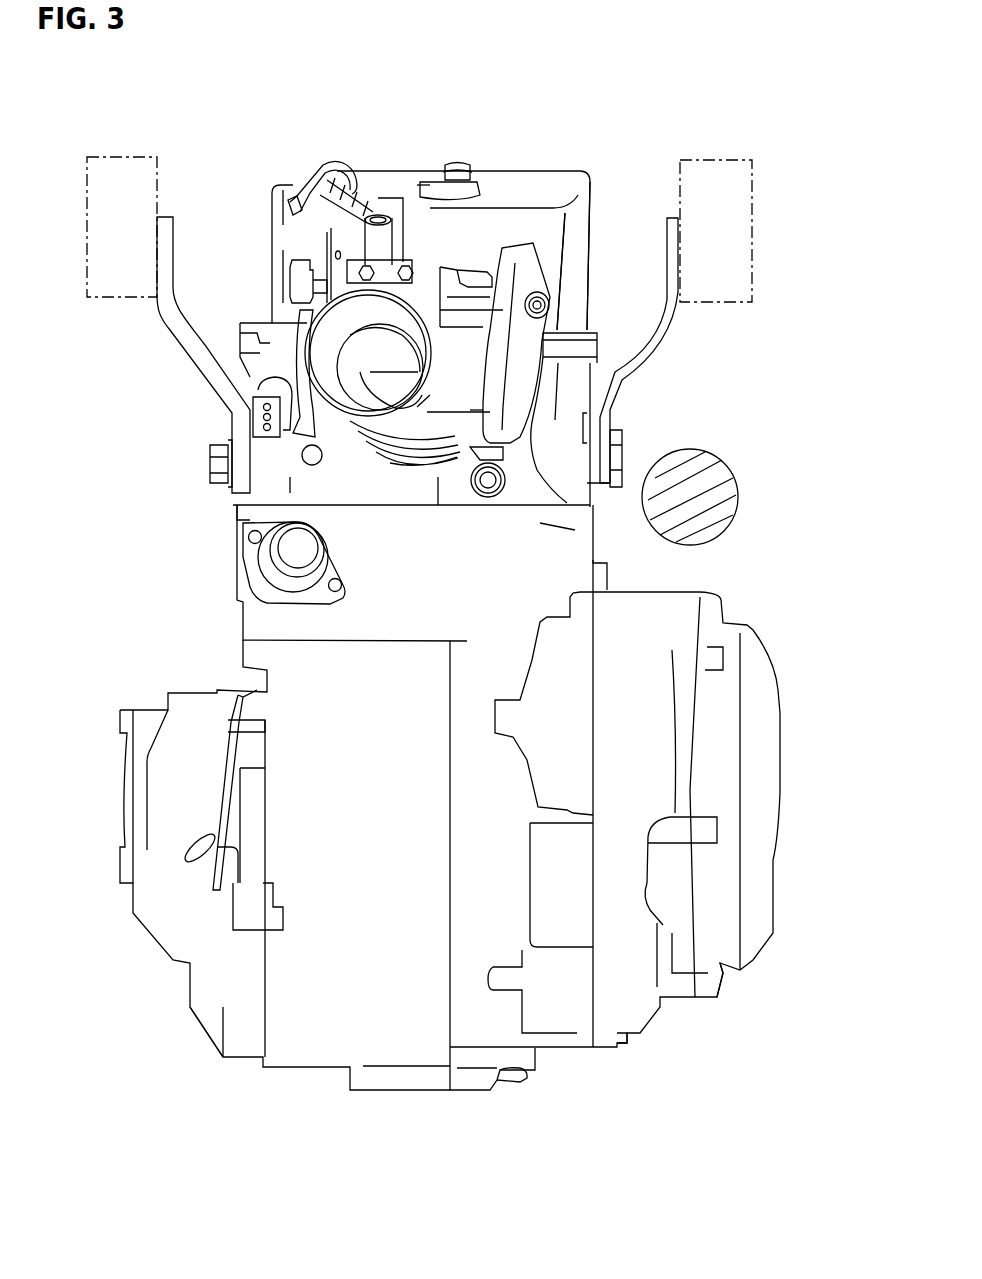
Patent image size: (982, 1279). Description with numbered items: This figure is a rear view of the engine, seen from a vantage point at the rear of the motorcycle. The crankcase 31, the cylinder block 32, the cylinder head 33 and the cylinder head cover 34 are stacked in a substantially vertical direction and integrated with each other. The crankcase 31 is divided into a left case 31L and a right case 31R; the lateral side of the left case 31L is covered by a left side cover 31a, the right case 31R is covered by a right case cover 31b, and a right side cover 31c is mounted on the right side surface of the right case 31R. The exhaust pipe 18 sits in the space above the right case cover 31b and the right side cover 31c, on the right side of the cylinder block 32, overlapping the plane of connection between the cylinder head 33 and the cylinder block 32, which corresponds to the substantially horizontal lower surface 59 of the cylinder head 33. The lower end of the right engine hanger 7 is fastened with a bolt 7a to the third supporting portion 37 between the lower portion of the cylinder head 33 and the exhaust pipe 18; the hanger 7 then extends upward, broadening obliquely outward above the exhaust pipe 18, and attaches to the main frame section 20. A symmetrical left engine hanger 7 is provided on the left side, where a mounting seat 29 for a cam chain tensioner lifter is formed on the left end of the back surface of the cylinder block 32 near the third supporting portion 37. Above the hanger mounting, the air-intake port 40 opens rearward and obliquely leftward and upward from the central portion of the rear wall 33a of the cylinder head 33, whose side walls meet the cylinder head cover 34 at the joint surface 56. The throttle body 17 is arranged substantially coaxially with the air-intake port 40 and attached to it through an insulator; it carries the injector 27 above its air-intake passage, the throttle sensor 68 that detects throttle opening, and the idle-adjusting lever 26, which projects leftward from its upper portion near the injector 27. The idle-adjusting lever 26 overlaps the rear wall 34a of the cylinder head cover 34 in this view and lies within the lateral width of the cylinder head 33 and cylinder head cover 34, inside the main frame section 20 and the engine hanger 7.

The main frame section 20 is at (148, 170).
The engine hanger 7 is at (193, 350).
The bolt 7a is at (207, 462).
The throttle body 17 is at (483, 267).
The exhaust pipe 18 is at (730, 513).
The idle-adjusting lever 26 is at (290, 280).
The injector 27 is at (398, 243).
The mounting seat 29 is at (250, 547).
The crankcase 31 is at (250, 1063).
The left side cover 31a is at (200, 1020).
The right case cover 31b is at (627, 1035).
The right side cover 31c is at (722, 963).
The left case 31L is at (315, 1050).
The right case 31R is at (495, 1012).
The cylinder block 32 is at (247, 625).
The cylinder head 33 is at (583, 397).
The rear wall 33a is at (567, 390).
The cylinder head cover 34 is at (547, 177).
The rear wall 34a is at (557, 240).
The third supporting portion 37 is at (257, 463).
The air-intake port 40 is at (333, 345).
The joint surface 56 is at (597, 333).
The lower surface 59 is at (540, 530).
The throttle sensor 68 is at (273, 373).